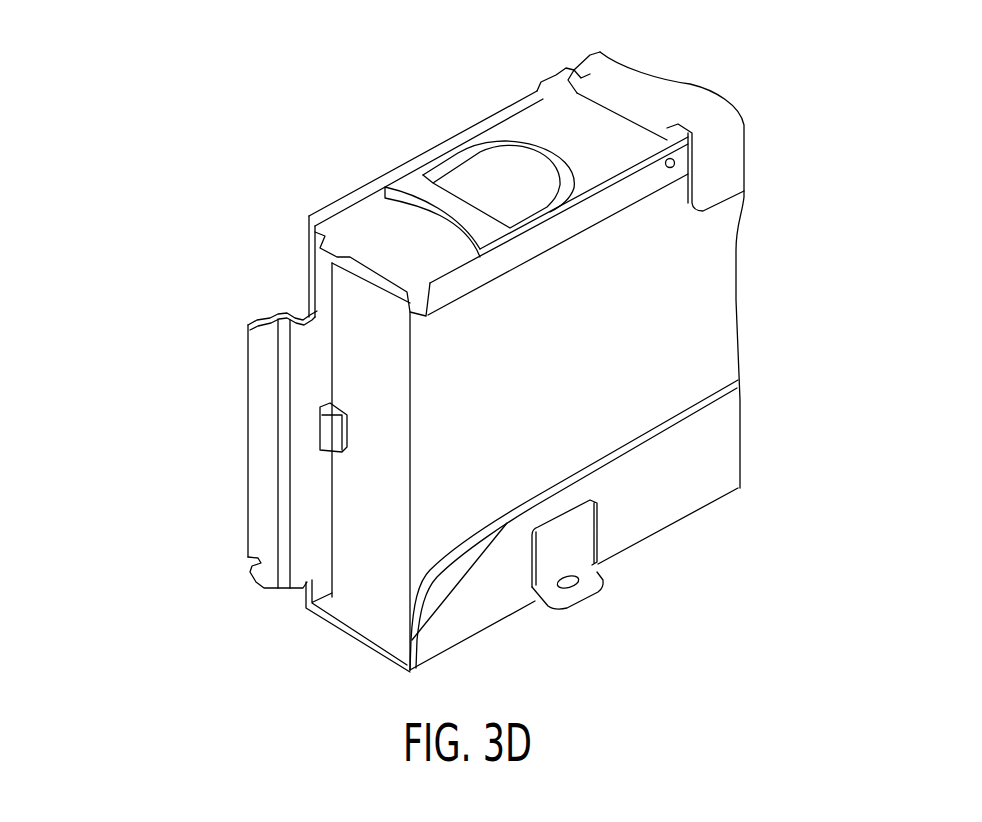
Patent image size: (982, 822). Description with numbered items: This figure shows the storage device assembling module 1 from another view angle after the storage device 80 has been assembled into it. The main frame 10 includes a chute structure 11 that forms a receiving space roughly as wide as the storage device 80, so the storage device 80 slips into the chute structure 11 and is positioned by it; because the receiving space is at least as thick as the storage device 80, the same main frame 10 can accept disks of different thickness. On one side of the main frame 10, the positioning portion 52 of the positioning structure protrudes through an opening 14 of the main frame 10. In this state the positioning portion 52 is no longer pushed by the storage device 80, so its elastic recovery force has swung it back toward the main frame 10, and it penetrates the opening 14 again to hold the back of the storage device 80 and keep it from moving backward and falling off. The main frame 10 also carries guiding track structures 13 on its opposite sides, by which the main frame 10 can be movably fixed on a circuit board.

The storage device assembling module 1 is at (902, 95).
The main frame 10 is at (320, 287).
The chute structure 11 is at (683, 488).
The guiding track structure 13 is at (268, 357).
The opening 14 is at (323, 450).
The positioning portion 52 is at (335, 432).
The storage device 80 is at (713, 285).